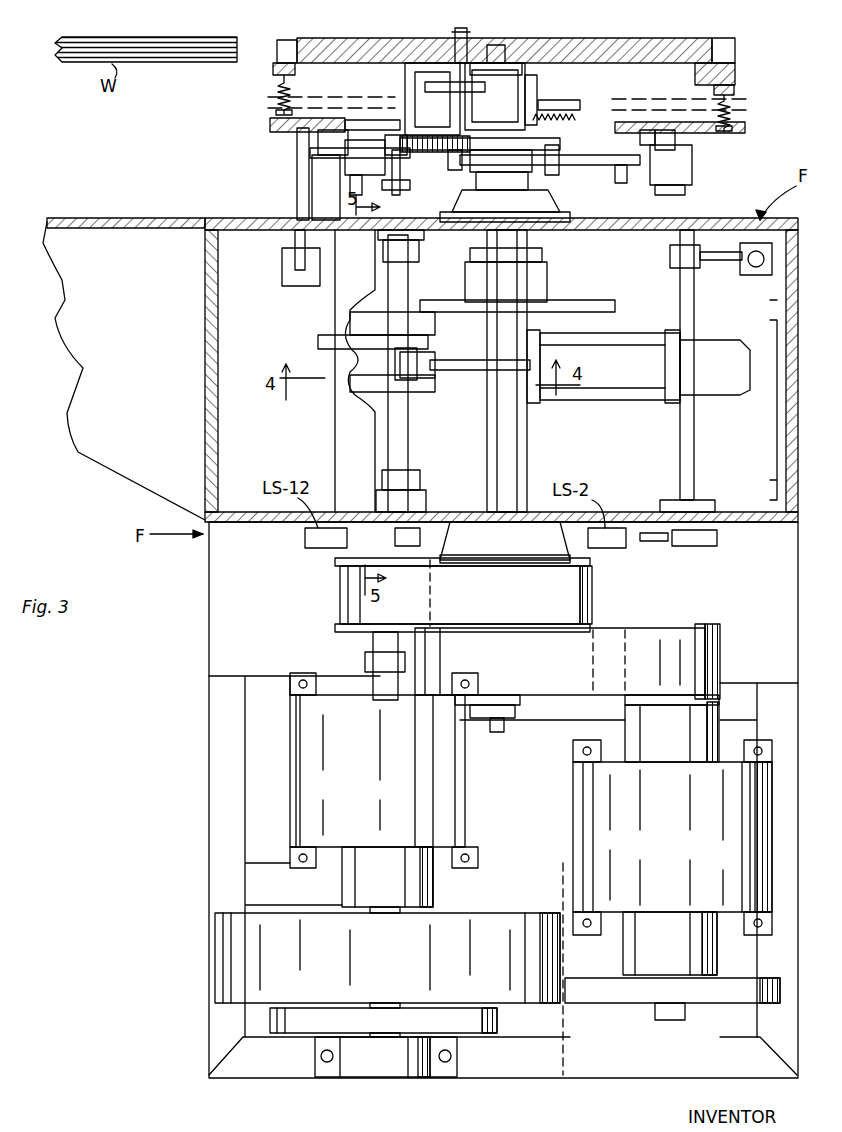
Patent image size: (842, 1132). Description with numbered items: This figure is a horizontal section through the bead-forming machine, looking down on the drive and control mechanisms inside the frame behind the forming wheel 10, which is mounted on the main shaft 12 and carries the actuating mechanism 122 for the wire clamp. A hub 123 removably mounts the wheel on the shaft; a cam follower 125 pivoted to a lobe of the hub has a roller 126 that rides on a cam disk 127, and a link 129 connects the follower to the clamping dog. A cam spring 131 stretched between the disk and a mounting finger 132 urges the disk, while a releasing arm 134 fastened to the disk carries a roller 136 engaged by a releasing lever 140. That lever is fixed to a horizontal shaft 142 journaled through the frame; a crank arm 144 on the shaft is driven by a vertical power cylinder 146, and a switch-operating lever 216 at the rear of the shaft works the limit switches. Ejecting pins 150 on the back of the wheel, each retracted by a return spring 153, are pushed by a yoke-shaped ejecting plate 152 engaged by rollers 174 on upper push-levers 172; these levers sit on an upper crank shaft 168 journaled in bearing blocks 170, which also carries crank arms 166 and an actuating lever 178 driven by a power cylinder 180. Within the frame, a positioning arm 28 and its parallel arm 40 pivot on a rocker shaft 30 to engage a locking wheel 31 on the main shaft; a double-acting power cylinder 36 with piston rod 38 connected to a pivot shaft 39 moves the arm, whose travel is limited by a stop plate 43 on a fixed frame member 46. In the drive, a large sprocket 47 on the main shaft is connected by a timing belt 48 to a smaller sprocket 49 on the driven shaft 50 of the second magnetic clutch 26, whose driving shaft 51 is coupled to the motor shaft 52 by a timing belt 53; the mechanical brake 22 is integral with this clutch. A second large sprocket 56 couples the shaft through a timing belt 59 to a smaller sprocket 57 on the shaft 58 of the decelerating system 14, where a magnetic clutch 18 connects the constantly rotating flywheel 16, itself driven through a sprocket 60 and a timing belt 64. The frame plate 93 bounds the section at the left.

The forming wheel 10 is at (700, 35).
The main shaft 12 is at (500, 45).
The decelerating system 14 is at (195, 858).
The flywheel 16 is at (222, 963).
The magnetic clutch 18 is at (300, 748).
The mechanical brake 22 is at (718, 710).
The second magnetic clutch 26 is at (585, 820).
The positioning arm 28 is at (350, 322).
The rocker shaft 30 is at (395, 420).
The locking wheel 31 is at (612, 302).
The double-acting power cylinder 36 is at (633, 398).
The piston rod 38 is at (476, 378).
The pivot shaft 39 is at (412, 352).
The parallel arm 40 is at (350, 395).
The stop plate 43 is at (318, 340).
The fixed frame member 46 is at (364, 296).
The large sprocket 47 is at (555, 698).
The timing belt 48 is at (607, 630).
The smaller sprocket 49 is at (705, 625).
The driven shaft 50 is at (670, 697).
The driving shaft 51 is at (680, 1015).
The motor shaft 52 is at (780, 985).
The timing belt 53 is at (615, 1004).
The second large sprocket 56 is at (590, 566).
The smaller sprocket 57 is at (335, 561).
The shaft 58 is at (373, 645).
The timing belt 59 is at (494, 609).
The sprocket 60 is at (288, 1035).
The timing belt 64 is at (498, 1035).
The frame plate 93 is at (90, 220).
The actuating mechanism 122 is at (590, 82).
The hub 123 is at (536, 92).
The cam follower 125 is at (430, 86).
The roller 126 is at (455, 165).
The cam disk 127 is at (482, 152).
The link 129 is at (455, 32).
The cam spring 131 is at (575, 122).
The mounting finger 132 is at (580, 100).
The releasing arm 134 is at (565, 142).
The roller 136 is at (560, 165).
The releasing lever 140 is at (592, 165).
The horizontal shaft 142 is at (695, 312).
The crank arm 144 is at (690, 262).
The power cylinder 146 is at (772, 272).
The ejecting pins 150 is at (272, 80).
The ejecting plate 152 is at (270, 125).
The return spring 153 is at (270, 100).
The crank arms 166 is at (380, 165).
The upper crank shaft 168 is at (405, 155).
The bearing blocks 170 is at (320, 140).
The upper push-lever 172 is at (345, 165).
The rollers 174 is at (370, 142).
The actuating lever 178 is at (300, 210).
The power cylinder 180 is at (282, 262).
The switch-operating lever 216 is at (717, 540).